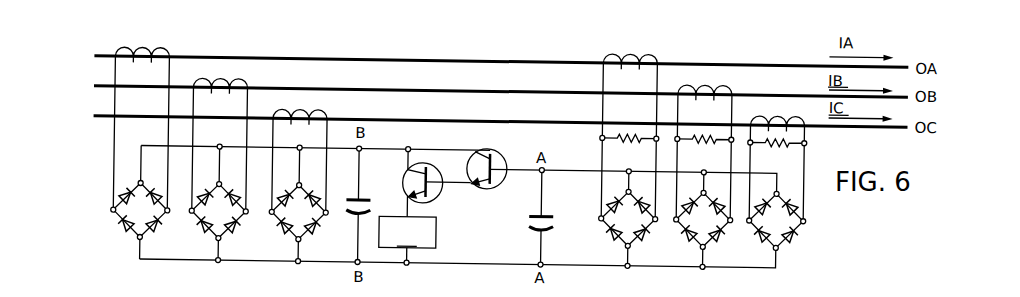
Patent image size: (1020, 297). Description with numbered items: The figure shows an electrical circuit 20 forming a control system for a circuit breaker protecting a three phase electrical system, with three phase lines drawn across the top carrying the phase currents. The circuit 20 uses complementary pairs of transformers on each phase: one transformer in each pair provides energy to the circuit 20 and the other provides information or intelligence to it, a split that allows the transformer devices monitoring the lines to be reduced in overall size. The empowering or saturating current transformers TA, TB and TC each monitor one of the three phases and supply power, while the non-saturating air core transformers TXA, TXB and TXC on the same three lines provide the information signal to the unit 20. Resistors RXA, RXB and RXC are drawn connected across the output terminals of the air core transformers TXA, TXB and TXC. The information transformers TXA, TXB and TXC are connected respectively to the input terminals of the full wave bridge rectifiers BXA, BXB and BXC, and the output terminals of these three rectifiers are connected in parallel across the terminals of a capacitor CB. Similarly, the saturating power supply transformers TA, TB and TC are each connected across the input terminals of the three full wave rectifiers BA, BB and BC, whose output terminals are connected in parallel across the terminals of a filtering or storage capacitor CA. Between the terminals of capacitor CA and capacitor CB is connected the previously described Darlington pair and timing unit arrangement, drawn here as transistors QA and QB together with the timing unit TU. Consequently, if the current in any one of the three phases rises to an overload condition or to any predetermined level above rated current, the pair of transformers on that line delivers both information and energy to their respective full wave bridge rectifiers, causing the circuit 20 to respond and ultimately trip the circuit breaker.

The saturating current transformer TA is at (128, 52).
The saturating current transformer TB is at (238, 83).
The saturating current transformer TC is at (318, 111).
The non-saturating air core transformer TXA is at (612, 53).
The non-saturating air core transformer TXB is at (722, 84).
The non-saturating air core transformer TXC is at (783, 112).
The burden resistor phase A RXA is at (647, 138).
The burden resistor phase B RXB is at (722, 138).
The burden resistor phase C RXC is at (794, 141).
The full wave rectifier BA is at (128, 243).
The full wave rectifier BB is at (215, 240).
The full wave rectifier BC is at (295, 239).
The full wave bridge rectifier BXA is at (620, 243).
The full wave bridge rectifier BXB is at (700, 245).
The full wave bridge rectifier BXC is at (773, 245).
The filtering or storage capacitor CA is at (366, 201).
The capacitor CB is at (570, 211).
The transistor QA is at (443, 192).
The transistor QB is at (485, 148).
The trip unit TU is at (408, 239).
The electrical circuit 20 is at (456, 195).